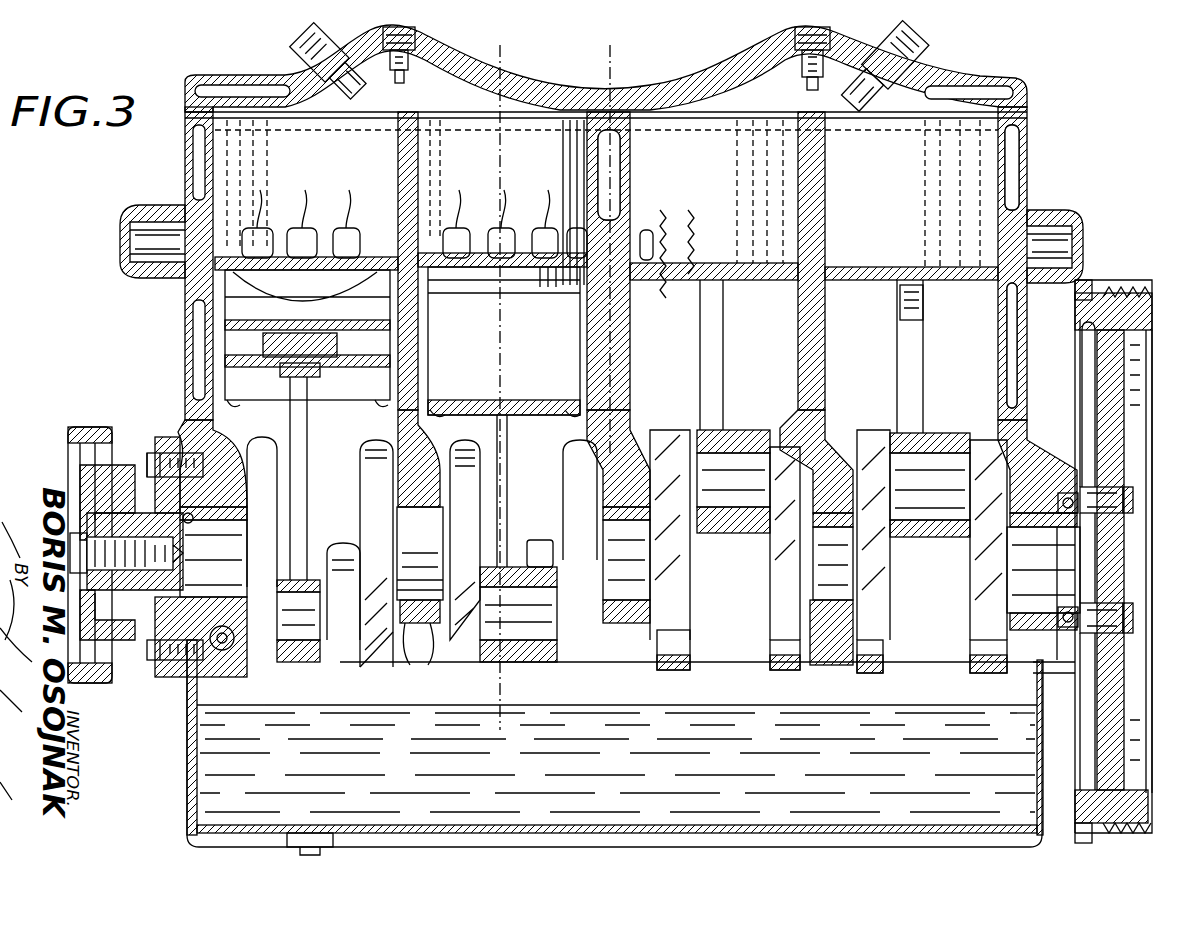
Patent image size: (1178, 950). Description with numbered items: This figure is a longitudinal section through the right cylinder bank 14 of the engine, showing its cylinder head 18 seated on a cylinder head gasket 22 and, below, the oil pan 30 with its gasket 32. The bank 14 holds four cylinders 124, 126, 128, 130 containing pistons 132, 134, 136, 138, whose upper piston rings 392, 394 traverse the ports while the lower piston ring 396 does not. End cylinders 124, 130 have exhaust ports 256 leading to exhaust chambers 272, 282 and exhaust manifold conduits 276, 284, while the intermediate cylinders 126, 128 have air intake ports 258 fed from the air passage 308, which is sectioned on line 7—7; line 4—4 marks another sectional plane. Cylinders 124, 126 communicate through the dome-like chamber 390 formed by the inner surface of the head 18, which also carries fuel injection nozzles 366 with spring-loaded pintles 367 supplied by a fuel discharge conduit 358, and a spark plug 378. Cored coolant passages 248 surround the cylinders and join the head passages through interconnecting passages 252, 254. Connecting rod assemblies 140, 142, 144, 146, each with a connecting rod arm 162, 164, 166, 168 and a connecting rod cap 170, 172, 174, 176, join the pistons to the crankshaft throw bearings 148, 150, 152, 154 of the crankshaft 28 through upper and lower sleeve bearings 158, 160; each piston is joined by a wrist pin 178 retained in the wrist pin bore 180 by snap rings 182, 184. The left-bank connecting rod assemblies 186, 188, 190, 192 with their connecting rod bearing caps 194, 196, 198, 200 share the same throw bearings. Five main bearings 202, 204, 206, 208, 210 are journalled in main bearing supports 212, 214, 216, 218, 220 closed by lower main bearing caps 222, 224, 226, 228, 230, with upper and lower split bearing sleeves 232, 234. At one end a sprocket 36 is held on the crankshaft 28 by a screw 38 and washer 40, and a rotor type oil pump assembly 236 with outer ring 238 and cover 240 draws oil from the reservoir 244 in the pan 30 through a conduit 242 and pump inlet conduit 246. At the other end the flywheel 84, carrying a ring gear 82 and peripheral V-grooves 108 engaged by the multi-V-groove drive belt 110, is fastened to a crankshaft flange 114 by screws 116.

The section line 4- 4 is at (500, 43).
The section line 7— 7 is at (587, 45).
The right cylinder bank 14 is at (1108, 160).
The cylinder head 18 is at (532, 80).
The cylinder head gasket 22 is at (1022, 117).
The crankshaft 28 is at (143, 505).
The oil pan 30 is at (1047, 763).
The oil pan gasket 32 is at (1037, 662).
The sprocket 36 is at (67, 433).
The screw 38 is at (87, 527).
The washer 40 is at (100, 500).
The ring gear 82 is at (1043, 797).
The flywheel 84 is at (1145, 815).
The V-grooves 108 is at (1125, 823).
The multi-V-groove continuous drive belt 110 is at (1115, 840).
The flange 114 is at (1120, 505).
The bolts or screws 116 is at (1125, 482).
The cylinder 124 is at (357, 190).
The cylinder 126 is at (563, 173).
The cylinder 128 is at (783, 322).
The cylinder 130 is at (977, 322).
The piston 132 is at (373, 258).
The piston 134 is at (433, 227).
The piston 136 is at (705, 322).
The piston 138 is at (868, 282).
The connecting rod assembly 140 is at (281, 427).
The connecting rod assembly 142 is at (482, 430).
The connecting rod assembly 144 is at (700, 377).
The connecting rod assembly 146 is at (896, 343).
The crankshaft throw bearing 148 is at (290, 640).
The crankshaft throw bearing 150 is at (500, 640).
The crankshaft throw bearing 152 is at (735, 537).
The crankshaft throw bearing 154 is at (913, 500).
The upper sleeve bearing 158 is at (913, 470).
The lower sleeve bearing 160 is at (960, 540).
The connecting rod arm 162 is at (280, 443).
The connecting rod arm 164 is at (487, 455).
The connecting rod arm 166 is at (699, 353).
The connecting rod arm 168 is at (897, 372).
The connecting rod cap 170 is at (290, 665).
The connecting rod cap 172 is at (487, 655).
The connecting rod cap 174 is at (693, 537).
The connecting rod cap 176 is at (890, 537).
The wrist pin 178 is at (365, 372).
The wrist pin bore 180 is at (395, 308).
The snap ring 182 is at (217, 327).
The snap ring 184 is at (400, 350).
The connecting rod assembly 186 is at (341, 546).
The connecting rod assembly 188 is at (539, 535).
The connecting rod assembly 190 is at (769, 428).
The connecting rod assembly 192 is at (955, 430).
The connecting rod bearing cap 194 is at (375, 655).
The connecting rod bearing cap 196 is at (543, 660).
The connecting rod bearing cap 198 is at (742, 537).
The connecting rod bearing cap 200 is at (967, 535).
The main bearing 202 is at (247, 715).
The main bearing 204 is at (423, 640).
The main bearing 206 is at (633, 640).
The main bearing 208 is at (803, 640).
The main bearing 210 is at (1020, 587).
The main bearing support 212 is at (233, 500).
The main bearing support 214 is at (398, 545).
The main bearing support 216 is at (686, 446).
The main bearing support 218 is at (873, 477).
The main bearing support 220 is at (975, 497).
The lower main bearing cap 222 is at (240, 690).
The lower main bearing cap 224 is at (345, 668).
The lower main bearing cap 226 is at (637, 640).
The lower main bearing cap 228 is at (827, 640).
The lower main bearing cap 230 is at (1023, 640).
The upper split-type bearing sleeve 232 is at (245, 512).
The lower split-type bearing sleeve 234 is at (613, 597).
The rotor type oil pump assembly 236 is at (193, 524).
The outer ring 238 is at (175, 430).
The cover 240 is at (160, 645).
The conduit 242 is at (227, 675).
The reservoir of oil 244 is at (693, 704).
The inlet conduit 246 is at (225, 650).
The coolant passages 248 is at (1045, 170).
The interconnecting passage 252 is at (183, 137).
The interconnecting passage 254 is at (1027, 97).
The exhaust ports 256 is at (247, 230).
The air intake ports 258 is at (735, 68).
The exhaust chamber 272 is at (200, 240).
The exhaust manifold conduit 276 is at (130, 233).
The exhaust chamber 282 is at (1053, 247).
The exhaust manifold conduit 284 is at (1080, 253).
The air passage 308 is at (616, 296).
The fuel discharge conduit 358 is at (290, 48).
The fuel injection nozzle 366 is at (336, 102).
The spring-loaded pintle 367 is at (360, 100).
The spark plug 378 is at (413, 67).
The dome-like chamber 390 is at (422, 108).
The upper piston ring 392 is at (377, 273).
The upper piston ring 394 is at (377, 290).
The lower piston ring 396 is at (235, 407).